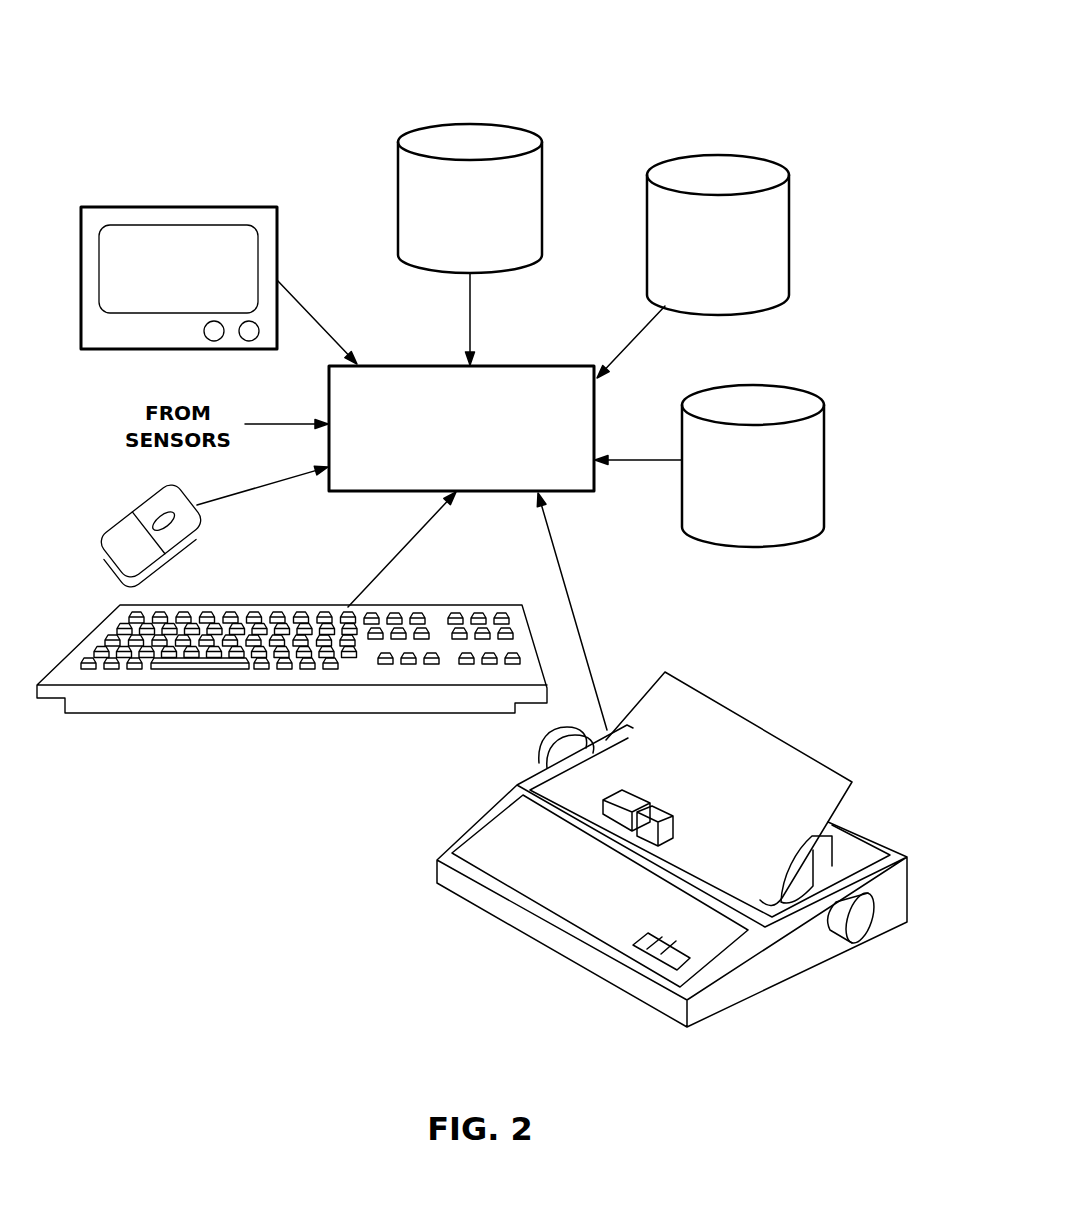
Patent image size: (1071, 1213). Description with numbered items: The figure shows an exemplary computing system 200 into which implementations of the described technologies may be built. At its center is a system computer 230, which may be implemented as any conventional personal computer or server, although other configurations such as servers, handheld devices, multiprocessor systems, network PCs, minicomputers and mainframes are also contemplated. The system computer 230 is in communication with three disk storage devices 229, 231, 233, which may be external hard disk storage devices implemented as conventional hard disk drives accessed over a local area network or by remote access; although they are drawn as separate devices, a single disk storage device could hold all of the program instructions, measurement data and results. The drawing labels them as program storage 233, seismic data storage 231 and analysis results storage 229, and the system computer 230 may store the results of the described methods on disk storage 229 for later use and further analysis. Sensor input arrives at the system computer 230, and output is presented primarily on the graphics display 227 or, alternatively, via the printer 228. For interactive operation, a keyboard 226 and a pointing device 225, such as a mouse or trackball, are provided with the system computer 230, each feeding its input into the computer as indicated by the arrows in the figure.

The computing system 200 is at (200, 87).
The pointing device 225 is at (130, 515).
The keyboard 226 is at (320, 715).
The graphics display 227 is at (207, 207).
The printer 228 is at (587, 968).
The disk storage device 229 is at (728, 383).
The system computer 230 is at (498, 365).
The disk storage device 231 is at (727, 152).
The disk storage device 233 is at (438, 122).